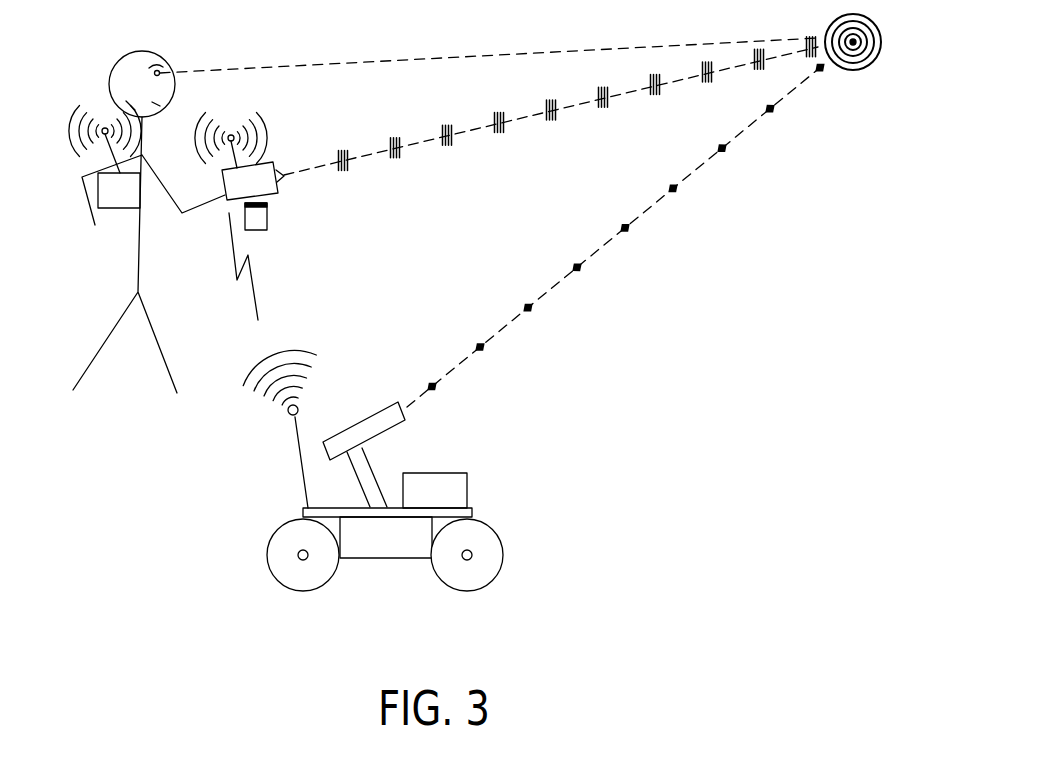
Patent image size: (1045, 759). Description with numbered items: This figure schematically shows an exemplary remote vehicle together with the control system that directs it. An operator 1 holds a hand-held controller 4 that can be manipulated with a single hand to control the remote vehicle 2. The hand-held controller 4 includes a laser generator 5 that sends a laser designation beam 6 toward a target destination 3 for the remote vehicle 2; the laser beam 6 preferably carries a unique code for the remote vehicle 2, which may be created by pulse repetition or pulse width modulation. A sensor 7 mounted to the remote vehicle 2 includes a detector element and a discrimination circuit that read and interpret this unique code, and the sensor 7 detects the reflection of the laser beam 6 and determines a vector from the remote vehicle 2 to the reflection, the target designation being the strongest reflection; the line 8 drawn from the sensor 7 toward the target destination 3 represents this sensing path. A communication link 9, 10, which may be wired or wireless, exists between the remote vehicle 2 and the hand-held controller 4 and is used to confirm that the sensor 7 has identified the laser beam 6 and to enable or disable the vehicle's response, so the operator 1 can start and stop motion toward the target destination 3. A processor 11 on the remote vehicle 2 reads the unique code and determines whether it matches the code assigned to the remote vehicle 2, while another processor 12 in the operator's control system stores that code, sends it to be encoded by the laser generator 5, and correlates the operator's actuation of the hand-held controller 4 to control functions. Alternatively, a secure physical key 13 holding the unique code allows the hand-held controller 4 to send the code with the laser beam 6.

The operator 1 is at (112, 65).
The remote vehicle 2 is at (400, 550).
The target destination 3 is at (868, 67).
The hand-held controller 4 is at (268, 187).
The laser generator 5 is at (282, 170).
The laser designation beam 6 is at (420, 147).
The sensor 7 is at (403, 420).
The sensor line of sight 8 is at (605, 250).
The communication link 9 is at (338, 343).
The communication link 10 is at (242, 111).
The processor 11 is at (460, 487).
The processor 12 is at (98, 193).
The secure physical key 13 is at (267, 230).